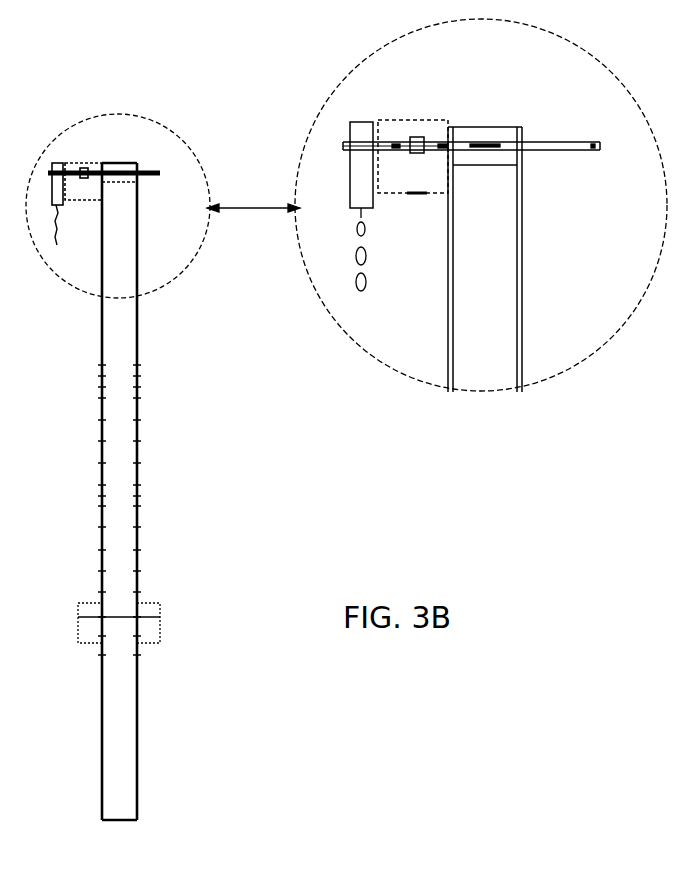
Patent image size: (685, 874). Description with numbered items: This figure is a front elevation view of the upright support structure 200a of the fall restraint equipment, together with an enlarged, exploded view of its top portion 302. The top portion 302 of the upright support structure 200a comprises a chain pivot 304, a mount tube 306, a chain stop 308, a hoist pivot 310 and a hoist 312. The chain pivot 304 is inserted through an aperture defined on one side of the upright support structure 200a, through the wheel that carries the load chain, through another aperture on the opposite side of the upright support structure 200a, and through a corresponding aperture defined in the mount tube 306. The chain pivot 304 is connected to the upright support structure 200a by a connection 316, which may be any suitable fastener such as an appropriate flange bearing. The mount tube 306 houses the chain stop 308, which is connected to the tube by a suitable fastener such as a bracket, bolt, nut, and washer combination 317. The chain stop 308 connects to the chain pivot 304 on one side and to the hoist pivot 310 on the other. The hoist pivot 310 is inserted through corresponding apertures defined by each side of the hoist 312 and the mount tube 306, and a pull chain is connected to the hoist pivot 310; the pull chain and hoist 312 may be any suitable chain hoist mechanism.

The upright support structure 200a is at (140, 778).
The top portion 302 is at (253, 198).
The chain pivot 304 is at (555, 140).
The mount tube 306 is at (438, 122).
The chain stop 308 is at (417, 137).
The hoist pivot 310 is at (349, 172).
The hoist 312 is at (362, 152).
The connection 316 is at (593, 143).
The bracket, bolt, nut, and washer combination 317 is at (428, 173).